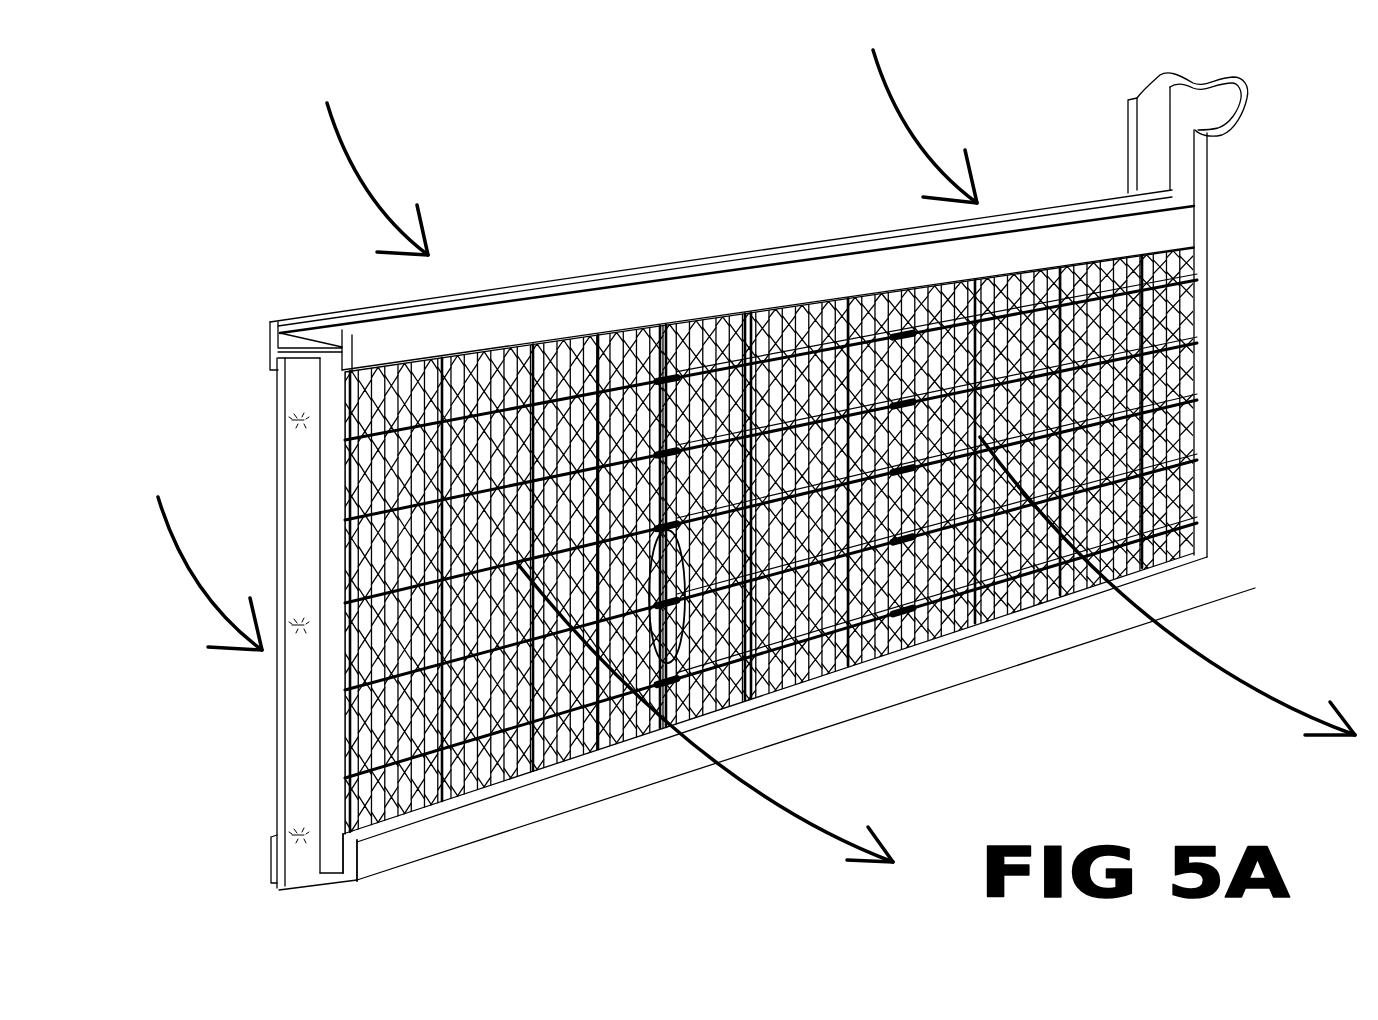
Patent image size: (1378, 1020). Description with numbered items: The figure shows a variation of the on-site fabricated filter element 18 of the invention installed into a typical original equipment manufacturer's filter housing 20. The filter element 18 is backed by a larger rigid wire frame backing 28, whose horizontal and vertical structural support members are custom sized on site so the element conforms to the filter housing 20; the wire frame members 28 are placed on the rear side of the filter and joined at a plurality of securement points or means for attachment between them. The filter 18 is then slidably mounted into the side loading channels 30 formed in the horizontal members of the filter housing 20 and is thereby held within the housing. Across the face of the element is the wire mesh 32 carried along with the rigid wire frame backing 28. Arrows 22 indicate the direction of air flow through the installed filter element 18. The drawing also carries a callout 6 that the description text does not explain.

The filter housing 20 is at (620, 300).
The channels 30 is at (310, 353).
The filter element 18 is at (387, 800).
The arrows 22 is at (800, 817).
The rigid wire frame backing 28 is at (578, 736).
The wire mesh 32 is at (495, 768).
The detail view reference (FIG. 6) 6 is at (702, 637).